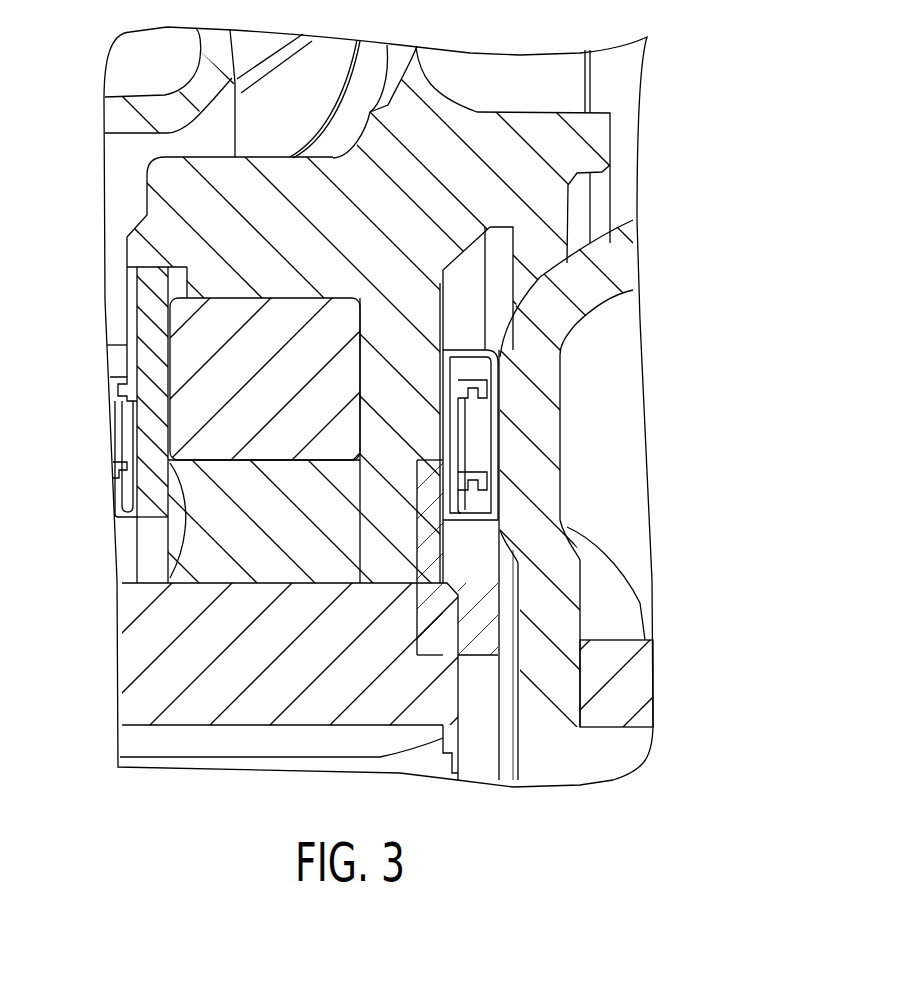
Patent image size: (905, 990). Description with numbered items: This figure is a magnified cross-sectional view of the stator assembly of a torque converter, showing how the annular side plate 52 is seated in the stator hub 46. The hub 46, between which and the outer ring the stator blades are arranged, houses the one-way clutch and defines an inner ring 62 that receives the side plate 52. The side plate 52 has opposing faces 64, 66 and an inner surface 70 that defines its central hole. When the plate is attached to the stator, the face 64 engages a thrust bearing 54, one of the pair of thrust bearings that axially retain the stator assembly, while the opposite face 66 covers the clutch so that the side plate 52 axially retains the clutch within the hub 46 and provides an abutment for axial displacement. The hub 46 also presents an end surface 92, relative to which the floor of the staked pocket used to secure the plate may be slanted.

The hub 46 is at (453, 177).
The inner ring 62 is at (133, 243).
The end surface 92 is at (123, 255).
The face 64 is at (137, 300).
The side plate 52 is at (150, 408).
The thrust bearing 54 is at (110, 473).
The inner surface 70 is at (157, 518).
The face 66 is at (172, 575).